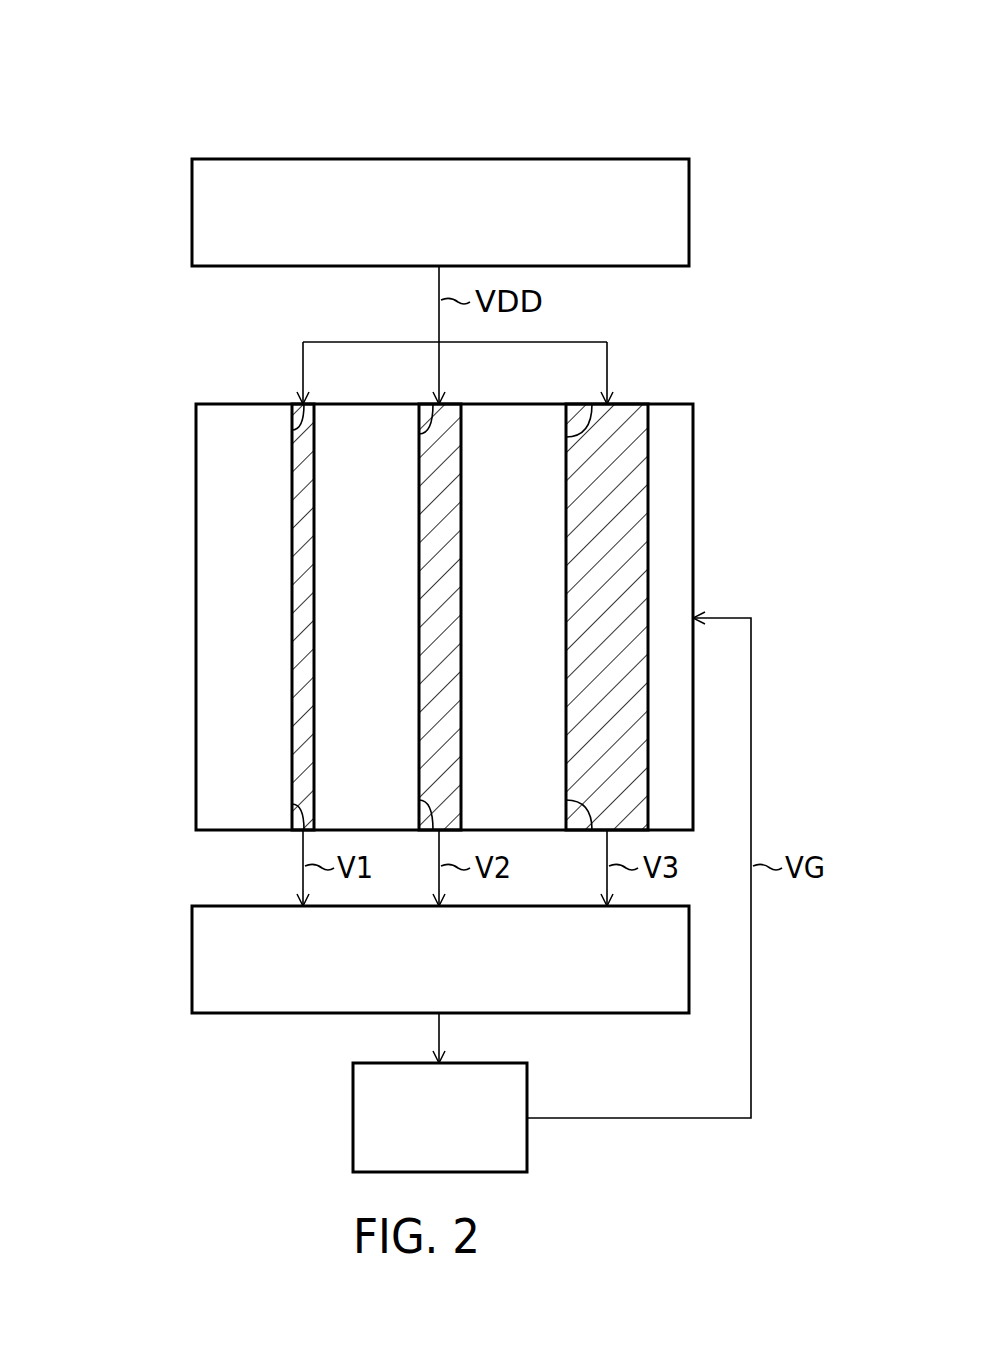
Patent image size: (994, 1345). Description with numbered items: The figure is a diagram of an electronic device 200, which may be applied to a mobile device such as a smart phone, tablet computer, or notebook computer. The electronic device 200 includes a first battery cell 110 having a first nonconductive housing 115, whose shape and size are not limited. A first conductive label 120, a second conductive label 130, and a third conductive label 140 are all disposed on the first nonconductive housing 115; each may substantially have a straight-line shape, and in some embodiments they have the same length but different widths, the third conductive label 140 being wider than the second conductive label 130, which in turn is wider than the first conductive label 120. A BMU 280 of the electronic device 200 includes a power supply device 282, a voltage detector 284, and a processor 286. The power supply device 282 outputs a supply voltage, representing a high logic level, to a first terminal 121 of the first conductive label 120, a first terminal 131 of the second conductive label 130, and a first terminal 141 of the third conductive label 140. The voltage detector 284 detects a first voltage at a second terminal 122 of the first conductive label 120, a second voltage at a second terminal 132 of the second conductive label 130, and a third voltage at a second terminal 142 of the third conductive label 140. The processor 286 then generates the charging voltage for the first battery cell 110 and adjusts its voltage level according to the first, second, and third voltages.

The electronic device 200 is at (92, 85).
The BMU 280 is at (725, 4).
The power supply device 282 is at (193, 159).
The voltage detector 284 is at (193, 906).
The processor 286 is at (354, 1063).
The first battery cell 110 is at (187, 492).
The first nonconductive housing 115 is at (196, 620).
The first conductive label 120 is at (305, 626).
The first terminal of the first conductive label 121 is at (296, 428).
The second terminal of the first conductive label 122 is at (296, 810).
The second conductive label 130 is at (450, 620).
The first terminal of the second conductive label 131 is at (421, 437).
The second terminal of the second conductive label 132 is at (421, 810).
The third conductive label 140 is at (578, 660).
The first terminal of the third conductive label 141 is at (569, 437).
The second terminal of the third conductive label 142 is at (571, 810).